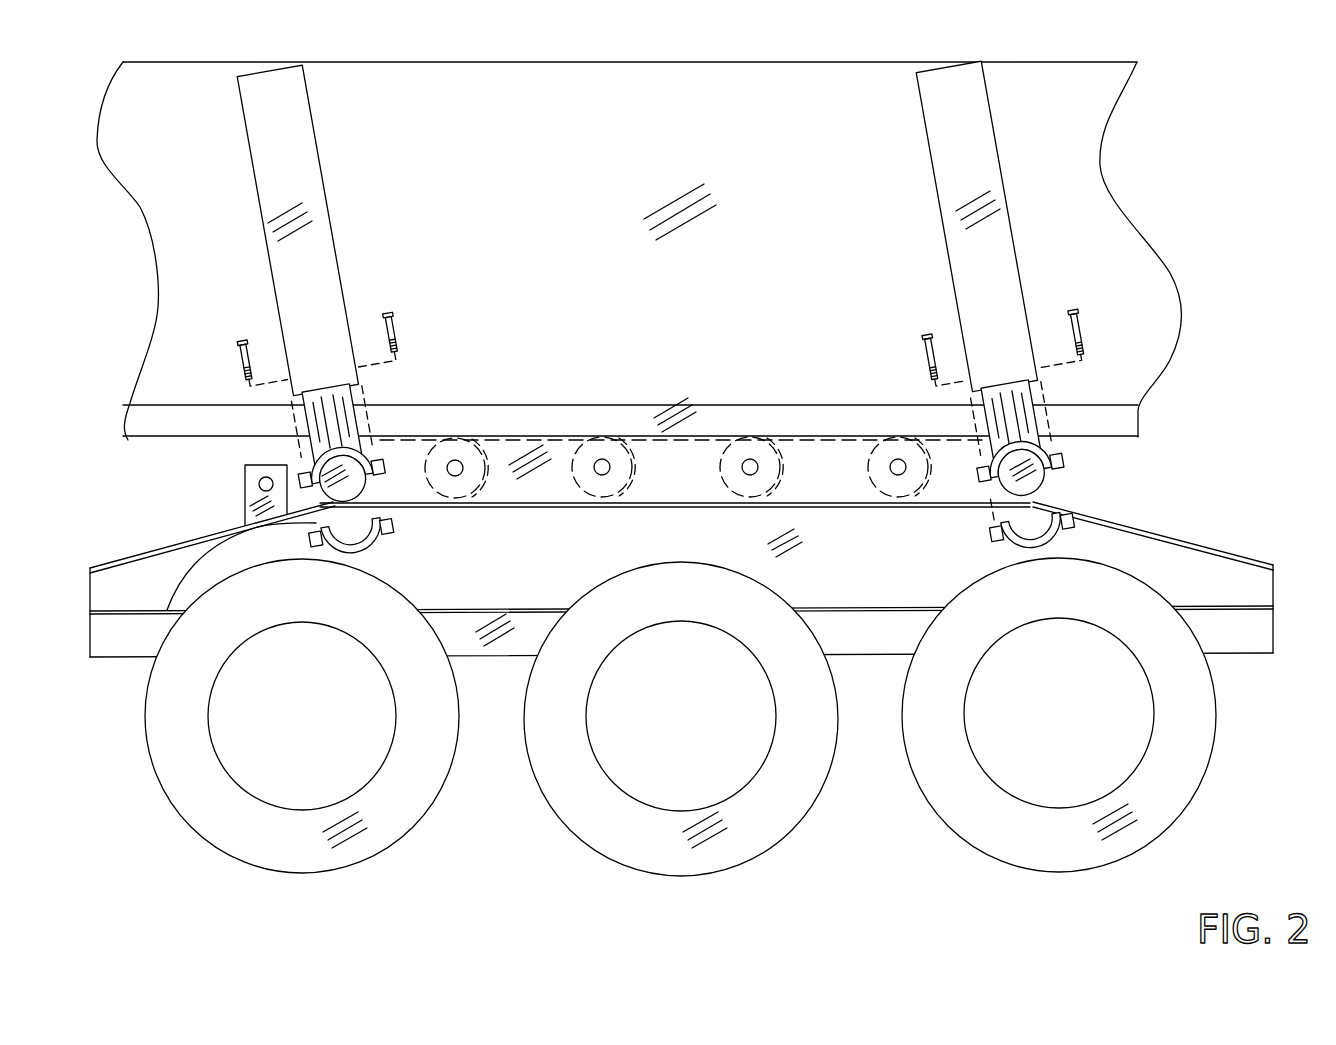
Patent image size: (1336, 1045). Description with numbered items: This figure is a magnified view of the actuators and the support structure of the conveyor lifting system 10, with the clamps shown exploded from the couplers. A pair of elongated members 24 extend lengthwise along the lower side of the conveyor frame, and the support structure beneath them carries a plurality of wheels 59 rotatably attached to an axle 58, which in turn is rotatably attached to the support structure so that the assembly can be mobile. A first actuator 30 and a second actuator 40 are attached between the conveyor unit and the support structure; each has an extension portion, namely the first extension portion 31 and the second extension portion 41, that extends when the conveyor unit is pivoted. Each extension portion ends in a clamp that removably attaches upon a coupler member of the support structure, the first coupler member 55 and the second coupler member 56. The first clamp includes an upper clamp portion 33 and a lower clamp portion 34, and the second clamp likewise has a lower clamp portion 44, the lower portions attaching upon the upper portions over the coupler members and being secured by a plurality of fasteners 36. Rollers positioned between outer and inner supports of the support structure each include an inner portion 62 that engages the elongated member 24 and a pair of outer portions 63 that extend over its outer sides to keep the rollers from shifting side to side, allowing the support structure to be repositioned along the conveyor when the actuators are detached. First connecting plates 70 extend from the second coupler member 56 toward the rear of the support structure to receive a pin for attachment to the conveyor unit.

The conveyor lifting system 10 is at (1190, 114).
The elongated members 24 is at (1139, 428).
The first actuator 30 is at (248, 210).
The first extension portion 31 is at (312, 461).
The upper clamp portion 33 is at (244, 505).
The lower clamp portion 34 is at (1064, 458).
The fasteners 36 is at (241, 346).
The second actuator 40 is at (1018, 199).
The second extension portion 41 is at (1047, 403).
The lower clamp portion 44 is at (1087, 530).
The first coupler member 55 is at (167, 610).
The second coupler member 56 is at (1050, 487).
The axle 58 is at (464, 467).
The wheels 59 is at (214, 848).
The inner portion 62 is at (776, 437).
The outer portions 63 is at (614, 438).
The first connecting plates 70 is at (244, 519).